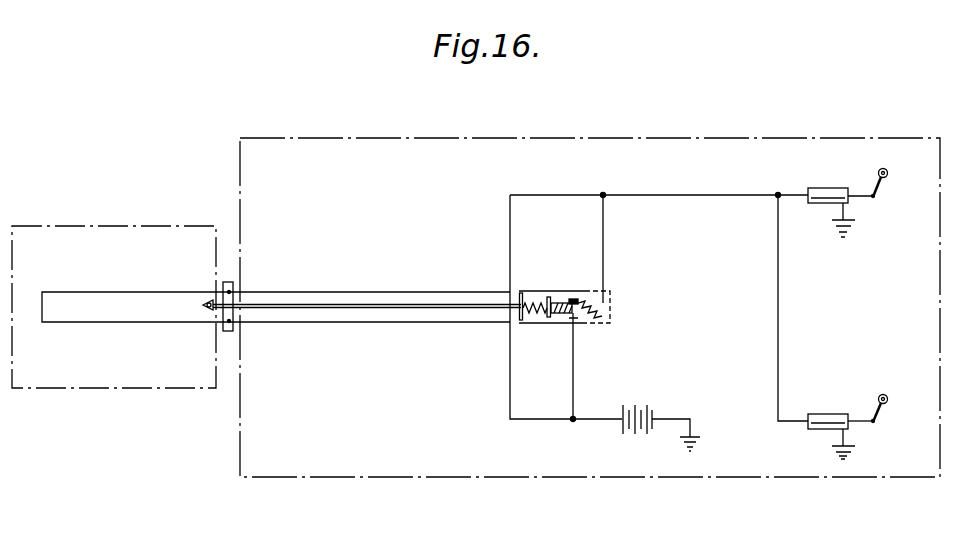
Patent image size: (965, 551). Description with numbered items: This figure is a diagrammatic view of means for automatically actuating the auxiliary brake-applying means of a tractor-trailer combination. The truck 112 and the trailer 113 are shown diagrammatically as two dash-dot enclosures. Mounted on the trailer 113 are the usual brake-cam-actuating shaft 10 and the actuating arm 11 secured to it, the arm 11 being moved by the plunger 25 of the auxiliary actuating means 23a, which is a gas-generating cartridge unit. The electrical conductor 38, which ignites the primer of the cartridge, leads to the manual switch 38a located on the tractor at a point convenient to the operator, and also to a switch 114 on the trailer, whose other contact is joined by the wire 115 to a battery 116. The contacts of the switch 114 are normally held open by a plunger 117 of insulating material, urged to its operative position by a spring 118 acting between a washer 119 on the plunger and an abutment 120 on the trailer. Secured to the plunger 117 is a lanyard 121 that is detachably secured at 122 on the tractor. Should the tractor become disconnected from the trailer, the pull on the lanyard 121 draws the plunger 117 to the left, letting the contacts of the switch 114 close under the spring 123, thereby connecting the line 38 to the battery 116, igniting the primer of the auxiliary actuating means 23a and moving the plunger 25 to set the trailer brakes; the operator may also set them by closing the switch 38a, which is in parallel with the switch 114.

The brake-cam-actuating shaft 10 is at (886, 171).
The actuating arm 11 is at (882, 185).
The auxiliary actuating means 23a is at (830, 194).
The plunger 25 is at (862, 420).
The electrical conductor 38 is at (708, 195).
The switch 38a is at (110, 287).
The truck 112 is at (98, 227).
The trailer 113 is at (432, 138).
The switch 114 is at (577, 298).
The wire 115 is at (575, 373).
The battery 116 is at (634, 411).
The plunger 117 is at (562, 323).
The spring 118 is at (531, 323).
The washer 119 is at (550, 296).
The abutment 120 is at (519, 295).
The lanyard 121 is at (389, 305).
The detachable securing point 122 is at (203, 305).
The spring 123 is at (610, 316).